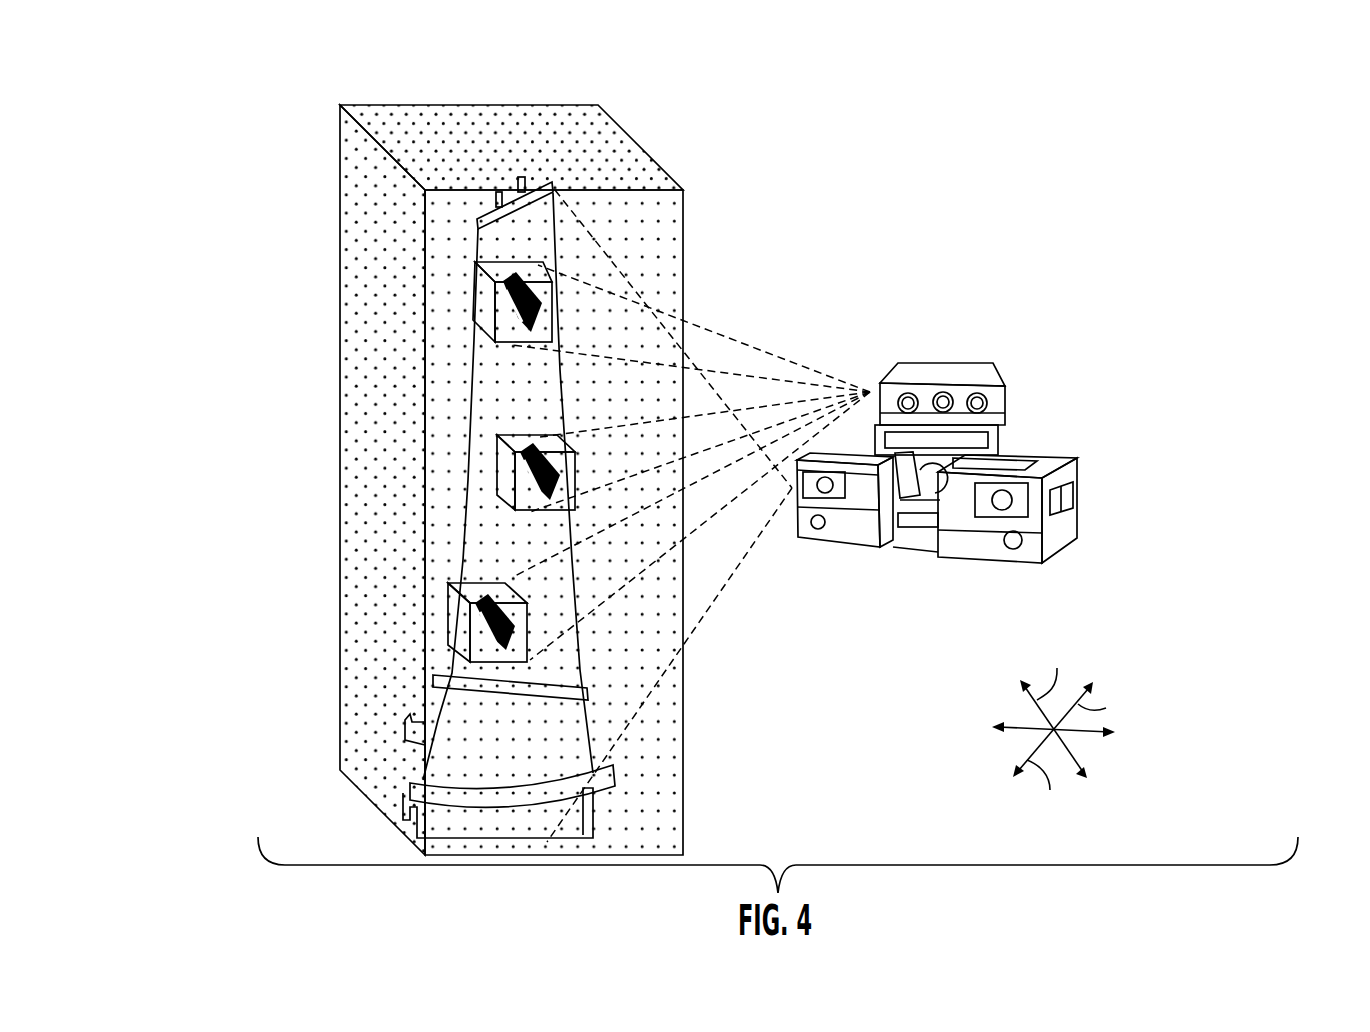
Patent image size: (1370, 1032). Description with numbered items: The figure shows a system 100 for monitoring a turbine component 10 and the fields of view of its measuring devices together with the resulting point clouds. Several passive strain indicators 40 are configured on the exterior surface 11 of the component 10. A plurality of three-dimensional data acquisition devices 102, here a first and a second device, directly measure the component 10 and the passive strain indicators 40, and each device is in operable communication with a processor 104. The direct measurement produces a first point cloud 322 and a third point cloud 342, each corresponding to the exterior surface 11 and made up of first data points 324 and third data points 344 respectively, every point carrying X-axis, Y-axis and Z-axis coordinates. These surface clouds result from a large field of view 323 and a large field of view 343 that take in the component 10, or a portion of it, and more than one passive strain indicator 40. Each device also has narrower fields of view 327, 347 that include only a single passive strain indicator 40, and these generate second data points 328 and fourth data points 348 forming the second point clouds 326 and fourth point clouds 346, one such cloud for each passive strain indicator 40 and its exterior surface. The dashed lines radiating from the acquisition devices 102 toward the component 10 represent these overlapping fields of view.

The system 100 is at (748, 432).
The component 10 is at (508, 507).
The exterior surface 11 is at (510, 372).
The passive strain indicator 40 is at (492, 439).
The three-dimensional data acquisition device 102 is at (966, 348).
The processor 104 is at (1045, 416).
The first point cloud 322 is at (410, 98).
The third point cloud 342 is at (511, 102).
The first data point 324 is at (390, 203).
The third data point 344 is at (314, 480).
The second point cloud 326 is at (480, 453).
The fourth point cloud 346 is at (368, 443).
The second data point 328 is at (500, 467).
The fourth data point 348 is at (395, 495).
The field of view 327 is at (798, 362).
The field of view 347 is at (693, 459).
The field of view 323 is at (700, 627).
The field of view 343 is at (702, 516).